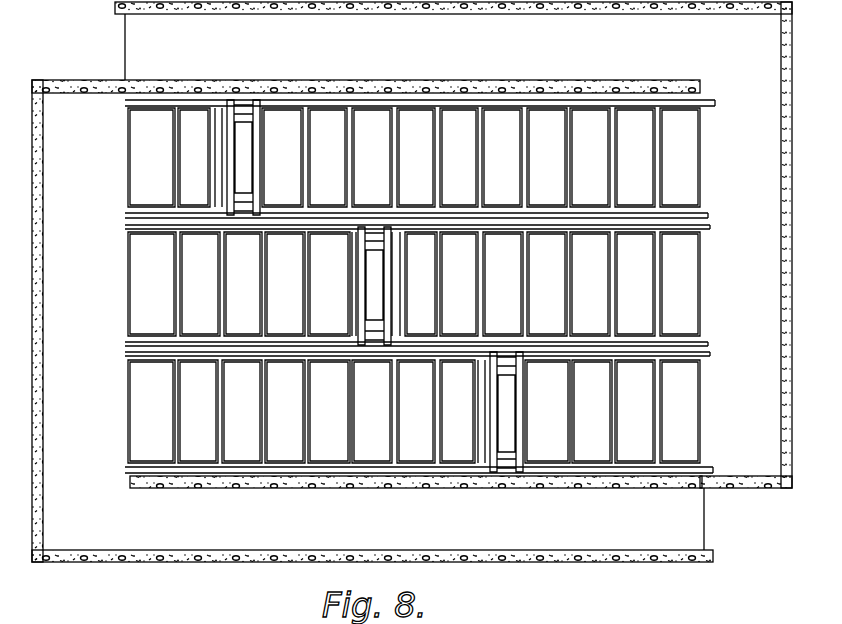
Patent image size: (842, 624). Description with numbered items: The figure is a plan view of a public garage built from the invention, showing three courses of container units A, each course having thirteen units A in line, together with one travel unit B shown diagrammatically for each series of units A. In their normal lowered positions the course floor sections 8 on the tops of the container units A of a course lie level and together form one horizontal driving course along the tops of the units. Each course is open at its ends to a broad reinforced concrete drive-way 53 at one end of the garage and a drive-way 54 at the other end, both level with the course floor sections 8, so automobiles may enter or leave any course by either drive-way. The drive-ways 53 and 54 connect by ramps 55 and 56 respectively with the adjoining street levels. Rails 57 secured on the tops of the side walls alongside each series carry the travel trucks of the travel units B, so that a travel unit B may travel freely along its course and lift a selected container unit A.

The course floor section 8 is at (422, 285).
The drive-way 53 is at (58, 321).
The drive-way 54 is at (746, 245).
The ramp 55 is at (372, 519).
The ramp 56 is at (412, 47).
The rail 57 is at (716, 104).
The container unit A is at (155, 160).
The travel unit B is at (248, 170).